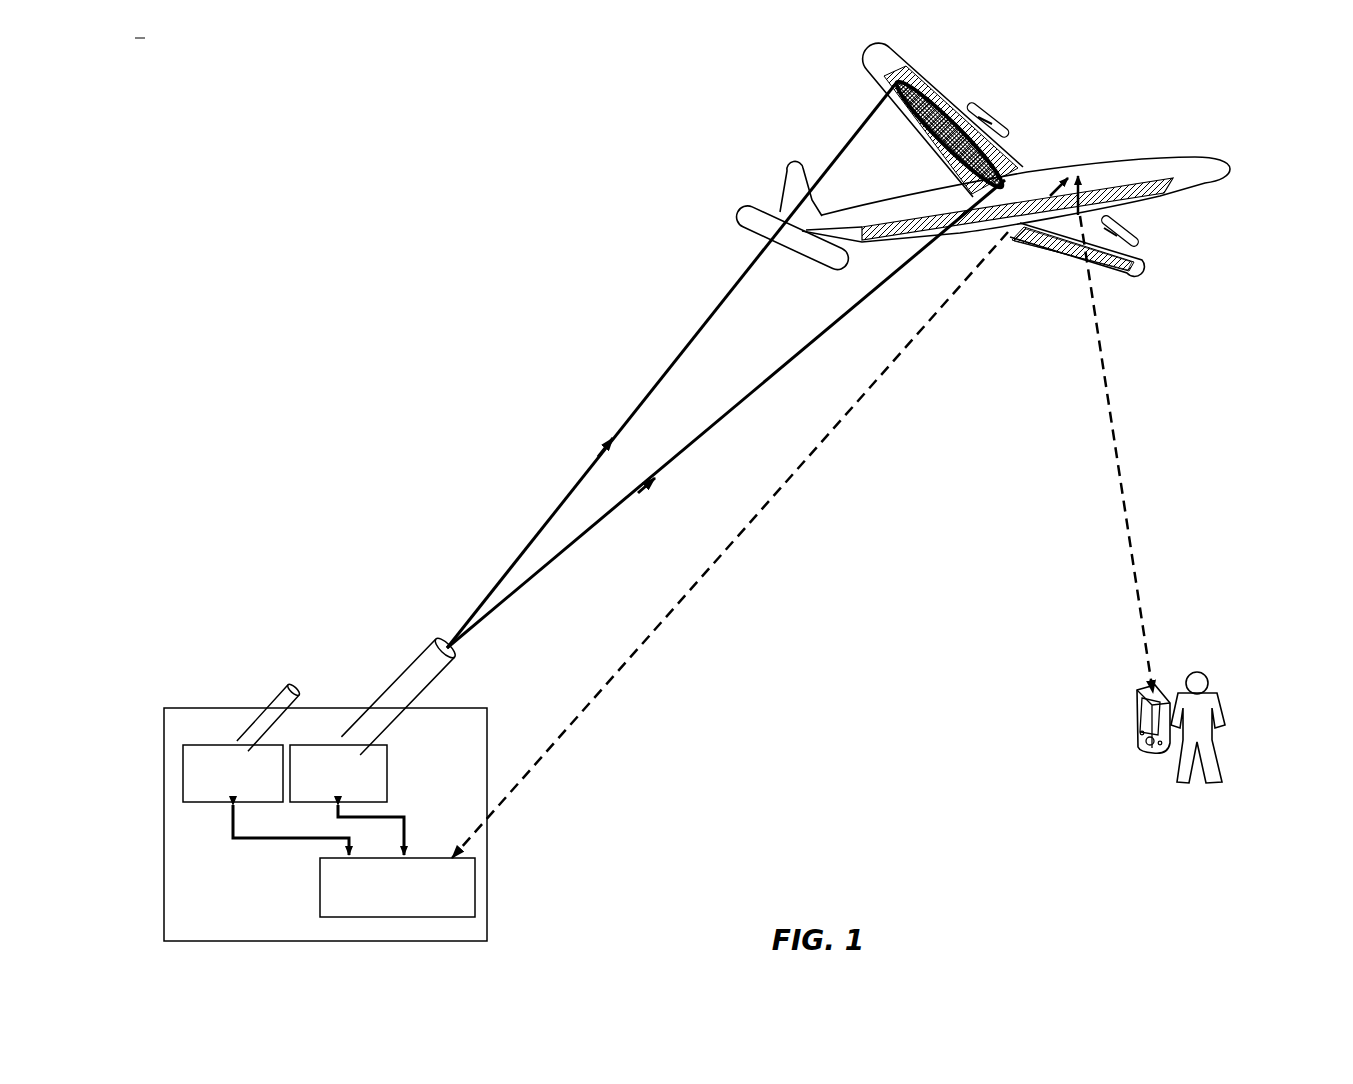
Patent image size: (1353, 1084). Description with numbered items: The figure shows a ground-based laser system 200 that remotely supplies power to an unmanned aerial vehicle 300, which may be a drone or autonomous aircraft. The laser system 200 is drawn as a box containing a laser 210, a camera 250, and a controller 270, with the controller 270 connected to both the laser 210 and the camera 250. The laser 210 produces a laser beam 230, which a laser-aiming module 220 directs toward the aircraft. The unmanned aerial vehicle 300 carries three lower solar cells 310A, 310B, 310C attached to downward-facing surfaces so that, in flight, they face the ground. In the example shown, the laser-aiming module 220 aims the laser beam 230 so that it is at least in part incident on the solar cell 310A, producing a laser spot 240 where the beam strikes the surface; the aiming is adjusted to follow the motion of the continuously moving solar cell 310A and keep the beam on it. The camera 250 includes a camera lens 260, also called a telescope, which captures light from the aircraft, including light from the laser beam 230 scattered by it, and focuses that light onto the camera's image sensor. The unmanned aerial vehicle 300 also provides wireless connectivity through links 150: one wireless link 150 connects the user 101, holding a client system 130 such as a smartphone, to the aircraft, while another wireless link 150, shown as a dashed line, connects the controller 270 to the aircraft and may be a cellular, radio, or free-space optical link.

The user 101 is at (1220, 703).
The client system 130 is at (1135, 710).
The link 150 is at (653, 637).
The laser system 200 is at (325, 824).
The laser 210 is at (347, 800).
The laser-aiming module 220 is at (418, 670).
The laser beam 230 is at (487, 604).
The laser spot 240 is at (935, 100).
The camera 250 is at (266, 800).
The camera lens 260 is at (280, 702).
The controller 270 is at (397, 887).
The unmanned aerial vehicle 300 is at (981, 159).
The solar cell 310A is at (1023, 167).
The solar cell 310B is at (1160, 198).
The solar cell 310C is at (1142, 262).